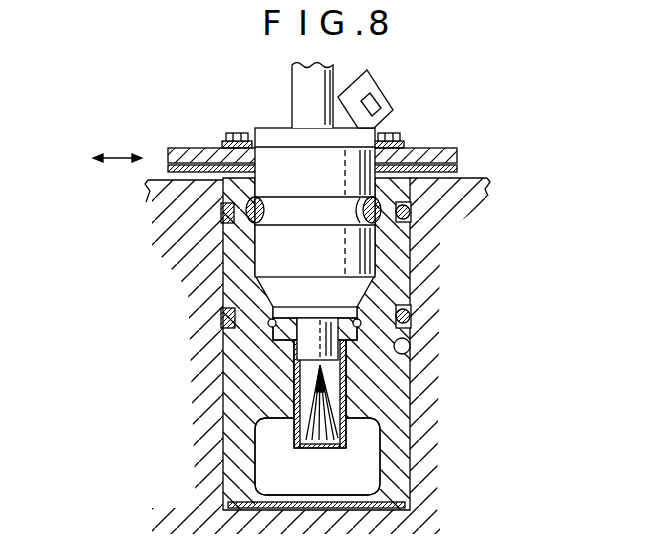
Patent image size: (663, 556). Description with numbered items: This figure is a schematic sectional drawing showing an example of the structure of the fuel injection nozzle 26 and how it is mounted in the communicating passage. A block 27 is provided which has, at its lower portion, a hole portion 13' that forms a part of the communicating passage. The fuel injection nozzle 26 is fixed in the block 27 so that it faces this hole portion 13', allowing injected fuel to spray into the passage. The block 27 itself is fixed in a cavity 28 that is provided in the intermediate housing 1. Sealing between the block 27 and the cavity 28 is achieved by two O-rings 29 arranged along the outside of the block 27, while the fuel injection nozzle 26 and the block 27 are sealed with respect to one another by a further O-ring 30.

The intermediate housing 1 is at (418, 257).
The hole portion 13' is at (258, 456).
The fuel injection nozzle 26 is at (384, 79).
The block 27 is at (397, 395).
The cavity 28 is at (435, 349).
The O-rings 29 is at (215, 212).
The O-ring 30 is at (378, 196).